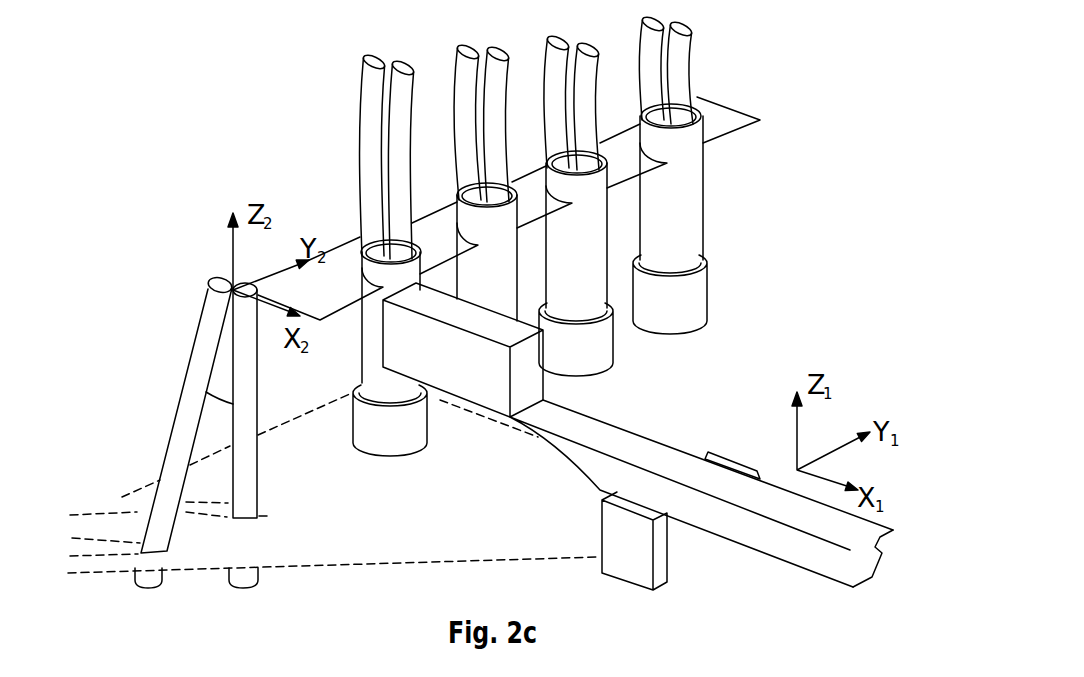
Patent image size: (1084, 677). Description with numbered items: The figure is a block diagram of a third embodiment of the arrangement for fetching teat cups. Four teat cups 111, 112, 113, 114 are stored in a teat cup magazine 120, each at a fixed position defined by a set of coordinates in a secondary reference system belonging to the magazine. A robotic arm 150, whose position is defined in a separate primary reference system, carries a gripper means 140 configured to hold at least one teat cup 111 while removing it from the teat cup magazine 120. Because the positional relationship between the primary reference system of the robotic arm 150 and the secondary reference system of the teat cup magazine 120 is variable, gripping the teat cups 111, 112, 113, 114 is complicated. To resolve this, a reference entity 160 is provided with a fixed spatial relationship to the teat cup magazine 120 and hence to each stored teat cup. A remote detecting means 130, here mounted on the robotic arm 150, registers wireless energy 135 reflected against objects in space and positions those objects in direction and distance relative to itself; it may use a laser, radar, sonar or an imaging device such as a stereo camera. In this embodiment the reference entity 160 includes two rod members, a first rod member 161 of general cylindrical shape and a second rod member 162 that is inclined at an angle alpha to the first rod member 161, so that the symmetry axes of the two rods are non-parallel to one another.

The teat cup 111 is at (517, 235).
The teat cup 112 is at (517, 242).
The teat cup 113 is at (613, 357).
The teat cup 114 is at (703, 170).
The teat cup magazine 120 is at (728, 108).
The remote detecting means 130 is at (660, 590).
The wireless energy 135 is at (379, 572).
The gripper means 140 is at (548, 390).
The robotic arm 150 is at (790, 566).
The reference entity 160 is at (224, 426).
The first rod member 161 is at (258, 467).
The second rod member 162 is at (178, 407).